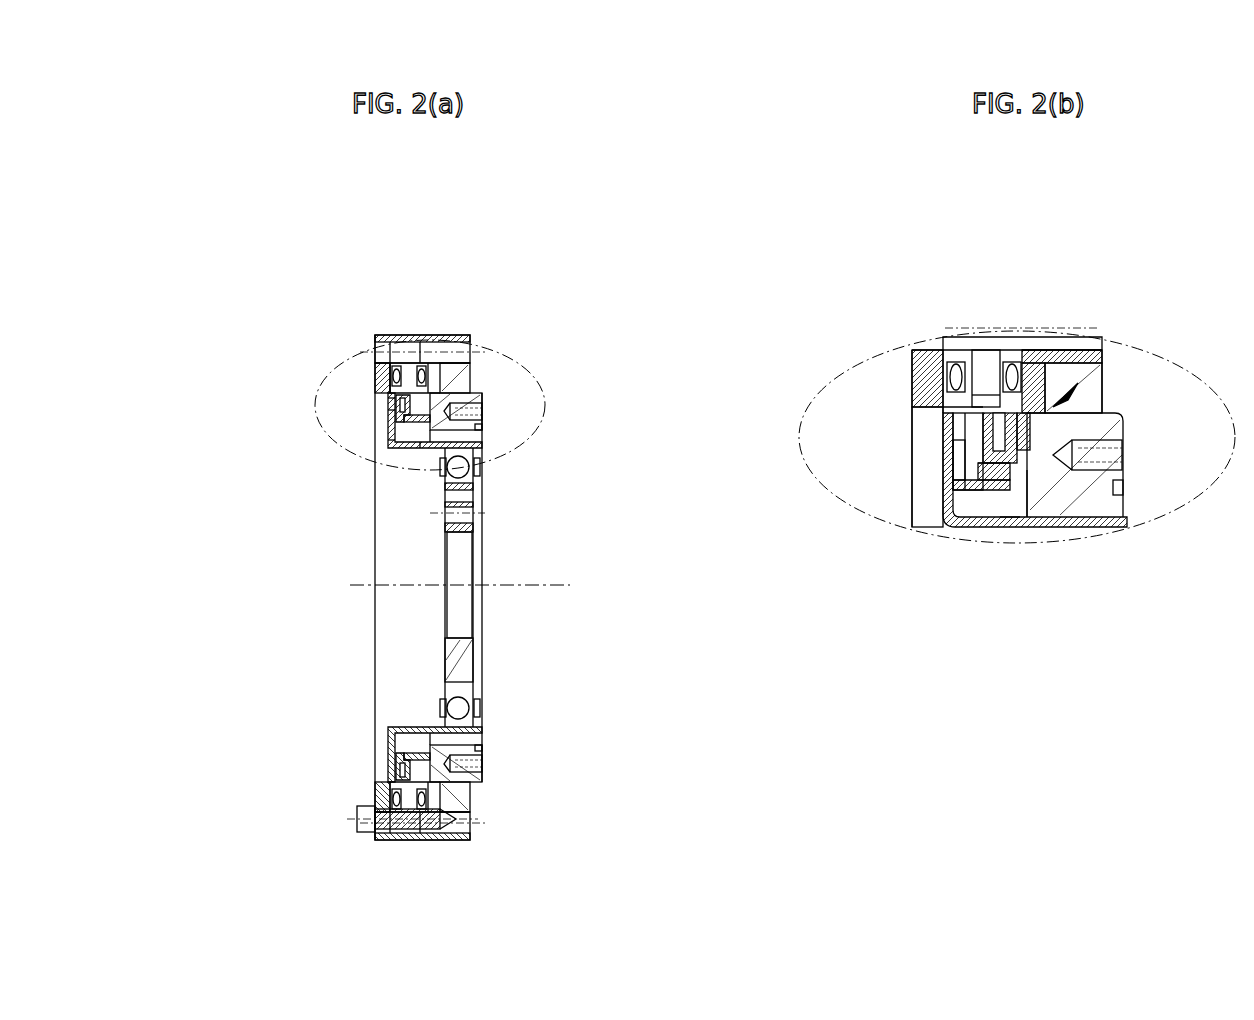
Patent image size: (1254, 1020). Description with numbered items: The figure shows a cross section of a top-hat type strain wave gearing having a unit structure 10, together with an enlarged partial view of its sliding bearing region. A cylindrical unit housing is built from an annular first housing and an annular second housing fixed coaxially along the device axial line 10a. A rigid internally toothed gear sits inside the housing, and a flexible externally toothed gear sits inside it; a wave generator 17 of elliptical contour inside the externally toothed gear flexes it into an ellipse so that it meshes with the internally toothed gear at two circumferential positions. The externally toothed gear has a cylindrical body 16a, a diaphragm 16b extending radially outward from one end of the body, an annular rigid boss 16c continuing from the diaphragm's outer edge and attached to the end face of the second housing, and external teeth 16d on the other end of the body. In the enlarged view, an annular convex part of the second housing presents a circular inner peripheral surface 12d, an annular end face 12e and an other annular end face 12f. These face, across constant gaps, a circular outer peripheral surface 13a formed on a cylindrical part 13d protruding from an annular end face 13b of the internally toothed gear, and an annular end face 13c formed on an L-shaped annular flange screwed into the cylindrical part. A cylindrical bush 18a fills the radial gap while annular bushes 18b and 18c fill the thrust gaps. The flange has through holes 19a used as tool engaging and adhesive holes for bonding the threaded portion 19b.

The strain wave gearing 10 is at (313, 348).
The device axial line 10a is at (548, 585).
The circular inner peripheral surface 12d is at (1125, 487).
The annular end face 12e is at (1125, 458).
The other annular end face 12f is at (912, 462).
The circular outer peripheral surface 13a is at (905, 500).
The annular end face 13b is at (1035, 345).
The annular end face 13c is at (972, 395).
The cylindrical part 13d is at (1002, 520).
The cylindrical body 16a is at (389, 446).
The diaphragm 16b is at (388, 425).
The rigid boss 16c is at (386, 394).
The external teeth 16d is at (437, 449).
The wave generator 17 is at (486, 500).
The cylindrical bush 18a is at (1033, 513).
The annular bush 18b is at (1033, 437).
The annular bush 18c is at (965, 437).
The through holes 19a is at (937, 505).
The threaded portion 19b is at (997, 480).